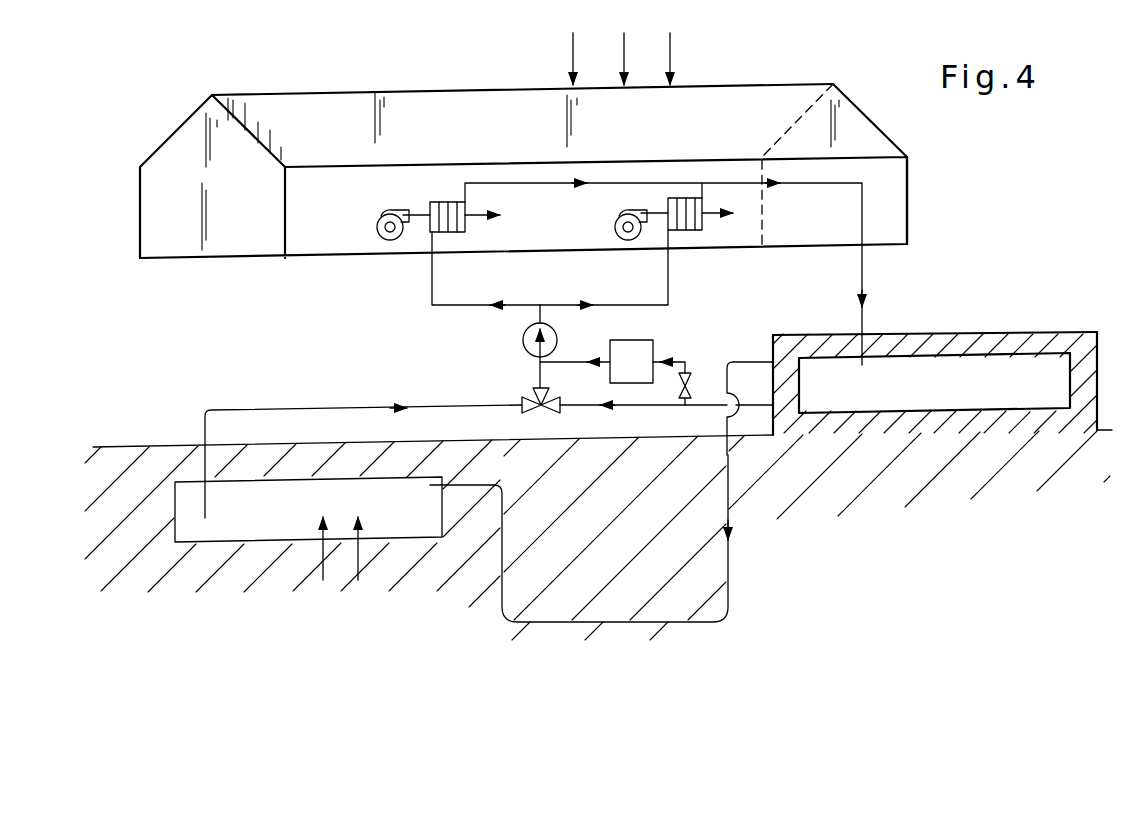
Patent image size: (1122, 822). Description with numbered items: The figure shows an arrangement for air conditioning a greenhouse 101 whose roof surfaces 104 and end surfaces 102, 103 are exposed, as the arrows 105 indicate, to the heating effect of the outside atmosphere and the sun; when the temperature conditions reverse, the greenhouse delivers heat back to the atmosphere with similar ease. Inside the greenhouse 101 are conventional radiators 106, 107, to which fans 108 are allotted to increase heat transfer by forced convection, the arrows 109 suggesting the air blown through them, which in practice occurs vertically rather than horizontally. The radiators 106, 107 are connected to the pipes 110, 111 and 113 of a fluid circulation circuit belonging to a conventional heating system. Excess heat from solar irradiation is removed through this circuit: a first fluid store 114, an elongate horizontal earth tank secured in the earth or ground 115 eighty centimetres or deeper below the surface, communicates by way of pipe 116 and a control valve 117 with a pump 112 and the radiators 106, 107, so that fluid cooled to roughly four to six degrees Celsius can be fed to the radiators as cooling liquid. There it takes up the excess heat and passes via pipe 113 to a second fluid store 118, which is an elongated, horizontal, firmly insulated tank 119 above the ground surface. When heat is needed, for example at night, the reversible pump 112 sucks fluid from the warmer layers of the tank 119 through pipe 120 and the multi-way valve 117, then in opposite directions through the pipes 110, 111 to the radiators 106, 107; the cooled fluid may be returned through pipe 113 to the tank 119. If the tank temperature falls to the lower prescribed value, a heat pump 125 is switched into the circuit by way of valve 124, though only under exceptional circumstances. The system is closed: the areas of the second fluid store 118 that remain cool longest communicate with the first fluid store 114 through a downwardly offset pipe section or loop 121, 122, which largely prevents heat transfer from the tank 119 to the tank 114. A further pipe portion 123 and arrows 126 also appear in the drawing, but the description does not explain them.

The greenhouse 101 is at (735, 81).
The end surface 102 is at (190, 137).
The end surface 103 is at (900, 183).
The roof surfaces 104 is at (420, 103).
The arrows 105 is at (638, 51).
The radiator 106 is at (467, 228).
The radiator 107 is at (704, 226).
The fans 108 is at (378, 222).
The arrows 109 is at (471, 213).
The pipe 110 is at (432, 282).
The pipe 111 is at (668, 282).
The pump 112 is at (524, 340).
The pipe 113 is at (630, 183).
The first fluid store 114 is at (225, 545).
The earth or ground 115 is at (133, 467).
The pipe 116 is at (272, 410).
The control valve 117 is at (531, 397).
The second fluid store 118 is at (1012, 378).
The tank 119 is at (974, 333).
The pipe 120 is at (808, 400).
The downwardly offset pipe section 121 is at (741, 360).
The loop 122 is at (686, 623).
The pipe 123 is at (473, 487).
The valve 124 is at (688, 385).
The heat pump 125 is at (632, 340).
The heat flow arrows 126 is at (334, 565).